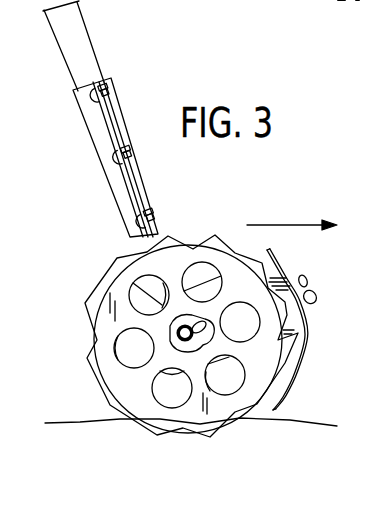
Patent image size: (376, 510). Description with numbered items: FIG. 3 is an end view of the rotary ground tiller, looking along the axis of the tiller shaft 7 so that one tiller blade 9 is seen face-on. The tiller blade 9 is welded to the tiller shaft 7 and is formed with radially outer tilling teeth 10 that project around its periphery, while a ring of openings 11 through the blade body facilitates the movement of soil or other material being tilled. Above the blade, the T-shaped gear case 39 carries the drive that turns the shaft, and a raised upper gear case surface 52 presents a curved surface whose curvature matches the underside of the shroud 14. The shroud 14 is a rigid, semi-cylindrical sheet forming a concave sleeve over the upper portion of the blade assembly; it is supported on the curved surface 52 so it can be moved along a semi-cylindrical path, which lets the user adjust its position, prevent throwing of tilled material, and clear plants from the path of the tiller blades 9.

The tiller shaft 7 is at (173, 345).
The tiller blades 9 is at (125, 302).
The tilling teeth 10 is at (208, 234).
The openings 11 is at (125, 352).
The shroud 14 is at (303, 374).
The T-shaped gear case 39 is at (122, 118).
The raised upper gear case surface 52 is at (276, 270).